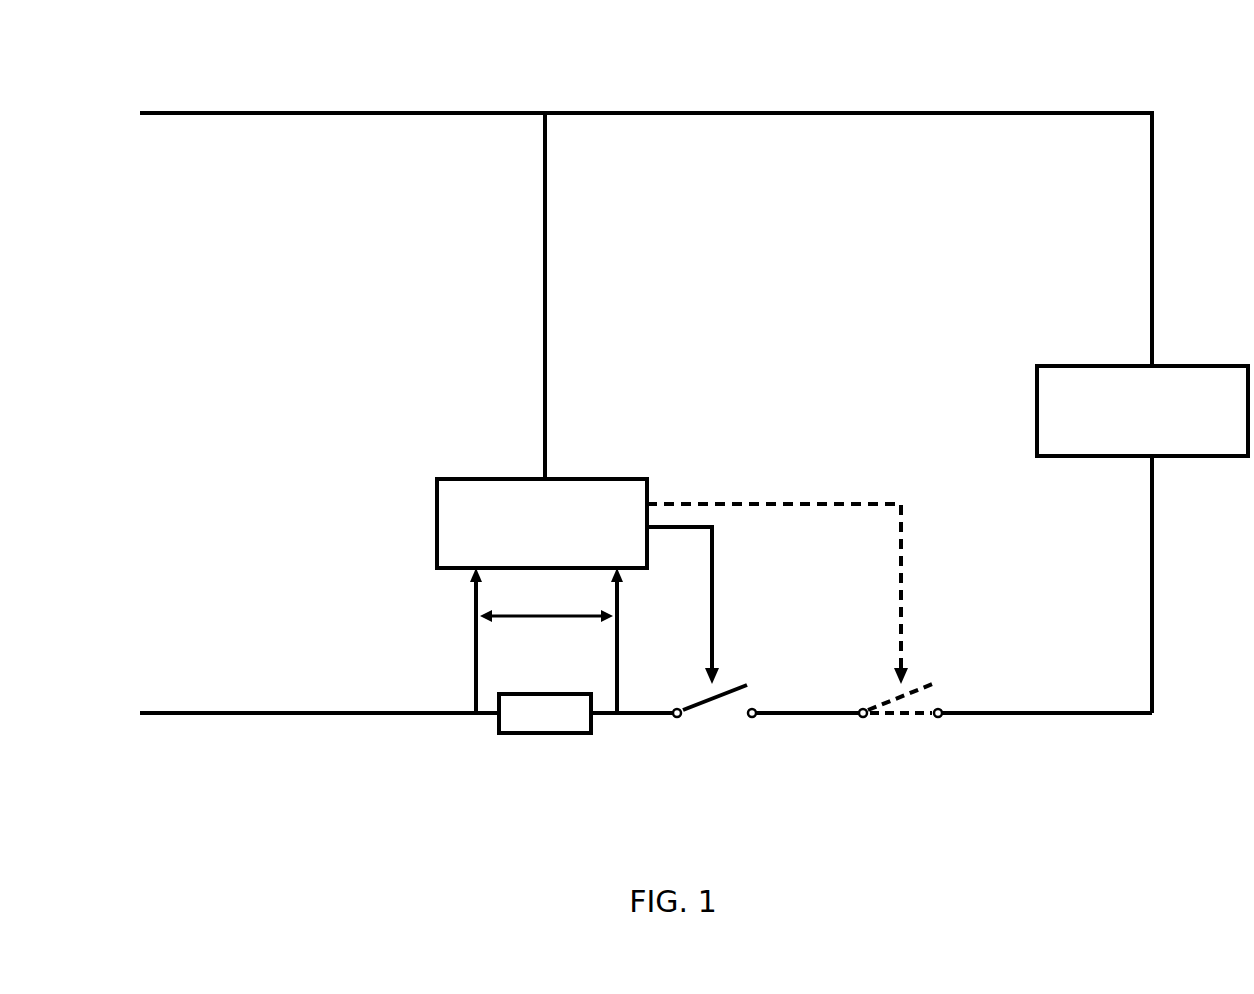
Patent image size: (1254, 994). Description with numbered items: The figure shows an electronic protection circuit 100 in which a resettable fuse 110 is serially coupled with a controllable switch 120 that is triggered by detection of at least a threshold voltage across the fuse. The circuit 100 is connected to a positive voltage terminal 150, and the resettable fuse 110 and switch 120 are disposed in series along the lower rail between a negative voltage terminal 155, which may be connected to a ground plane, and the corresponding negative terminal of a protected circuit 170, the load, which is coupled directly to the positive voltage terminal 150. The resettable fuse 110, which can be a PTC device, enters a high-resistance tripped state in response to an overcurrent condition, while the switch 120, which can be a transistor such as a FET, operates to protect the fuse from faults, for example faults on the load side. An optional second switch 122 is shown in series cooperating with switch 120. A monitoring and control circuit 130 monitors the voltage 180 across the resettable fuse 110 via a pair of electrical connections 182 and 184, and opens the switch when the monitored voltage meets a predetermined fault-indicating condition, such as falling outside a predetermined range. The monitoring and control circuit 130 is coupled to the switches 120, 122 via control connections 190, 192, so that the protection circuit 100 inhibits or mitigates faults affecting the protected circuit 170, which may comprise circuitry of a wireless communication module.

The electronic protection circuit 100 is at (718, 398).
The resettable fuse 110 is at (545, 705).
The controllable switch 120 is at (695, 690).
The optional switch 122 is at (882, 693).
The monitoring and control circuit 130 is at (487, 490).
The positive voltage terminal 150 is at (115, 92).
The negative voltage terminal 155 is at (120, 692).
The protected circuit 170 is at (1090, 362).
The voltage across the resettable fuse 180 is at (546, 604).
The electrical connection 182 is at (470, 660).
The electrical connection 184 is at (625, 635).
The control connection 190 is at (715, 578).
The control connection 192 is at (905, 578).